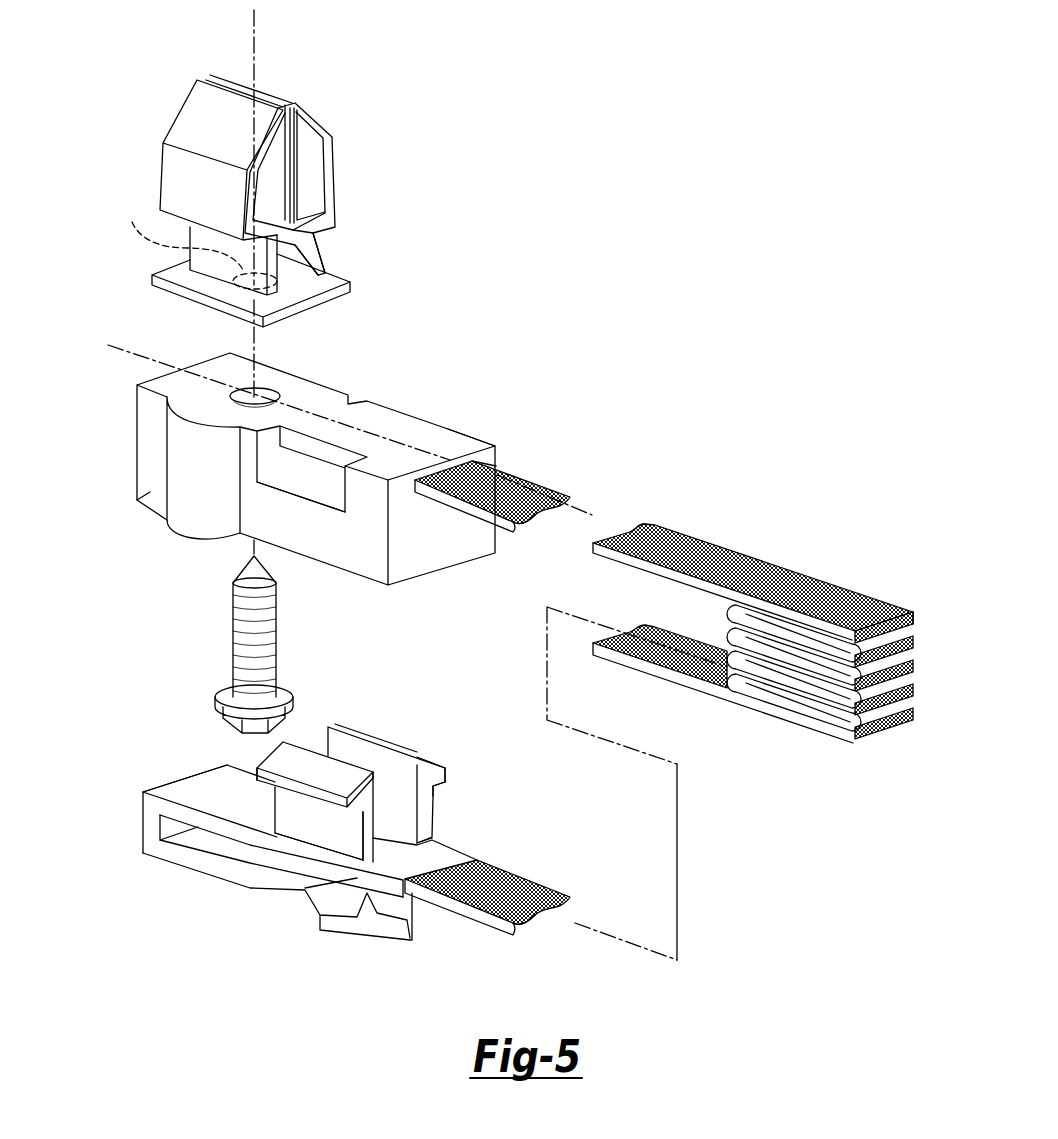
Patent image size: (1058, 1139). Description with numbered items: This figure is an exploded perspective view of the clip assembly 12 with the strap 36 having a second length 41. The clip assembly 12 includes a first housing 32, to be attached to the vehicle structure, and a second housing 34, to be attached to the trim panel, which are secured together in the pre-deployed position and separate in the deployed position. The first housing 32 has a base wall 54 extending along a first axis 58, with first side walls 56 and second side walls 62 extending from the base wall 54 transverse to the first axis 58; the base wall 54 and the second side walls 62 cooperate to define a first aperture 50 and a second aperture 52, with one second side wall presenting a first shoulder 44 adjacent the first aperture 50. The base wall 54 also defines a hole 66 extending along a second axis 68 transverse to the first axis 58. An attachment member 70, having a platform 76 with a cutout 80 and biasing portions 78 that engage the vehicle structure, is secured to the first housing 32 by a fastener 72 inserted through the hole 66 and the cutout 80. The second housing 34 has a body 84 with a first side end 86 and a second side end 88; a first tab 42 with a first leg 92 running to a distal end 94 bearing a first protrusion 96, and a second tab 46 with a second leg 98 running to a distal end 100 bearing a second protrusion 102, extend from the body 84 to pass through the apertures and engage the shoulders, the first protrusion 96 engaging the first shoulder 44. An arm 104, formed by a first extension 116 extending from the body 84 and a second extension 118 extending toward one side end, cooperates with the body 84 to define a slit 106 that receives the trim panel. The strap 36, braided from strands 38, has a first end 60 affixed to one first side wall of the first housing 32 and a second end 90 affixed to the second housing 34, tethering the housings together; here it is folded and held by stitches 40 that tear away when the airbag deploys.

The clip assembly 12 is at (505, 245).
The first housing 32 is at (529, 417).
The second housing 34 is at (271, 817).
The strap 36 is at (659, 695).
The strands 38 is at (615, 705).
The stitches 40 is at (794, 625).
The second length 41 is at (739, 783).
The first tab 42 is at (315, 736).
The first shoulder 44 is at (312, 547).
The second tab 46 is at (386, 758).
The first aperture 50 is at (314, 419).
The second aperture 52 is at (296, 465).
The base wall 54 is at (168, 468).
The first side walls 56 is at (284, 479).
The first axis 58 is at (344, 391).
The first end 60 is at (520, 443).
The second side walls 62 is at (327, 477).
The hole 66 is at (270, 362).
The second axis 68 is at (218, 282).
The attachment member 70 is at (342, 251).
The fastener 72 is at (227, 644).
The platform 76 is at (277, 291).
The biasing portions 78 is at (251, 171).
The cutout 80 is at (198, 244).
The body 84 is at (209, 752).
The first side end 86 is at (425, 903).
The second side end 88 is at (220, 813).
The second end 90 is at (445, 832).
The first leg 92 is at (319, 842).
The distal end 94 is at (323, 828).
The first protrusion 96 is at (238, 794).
The second leg 98 is at (464, 787).
The distal end 100 is at (478, 757).
The second protrusion 102 is at (460, 734).
The arm 104 is at (277, 899).
The slit 106 is at (302, 913).
The first extension 116 is at (115, 845).
The second extension 118 is at (260, 873).